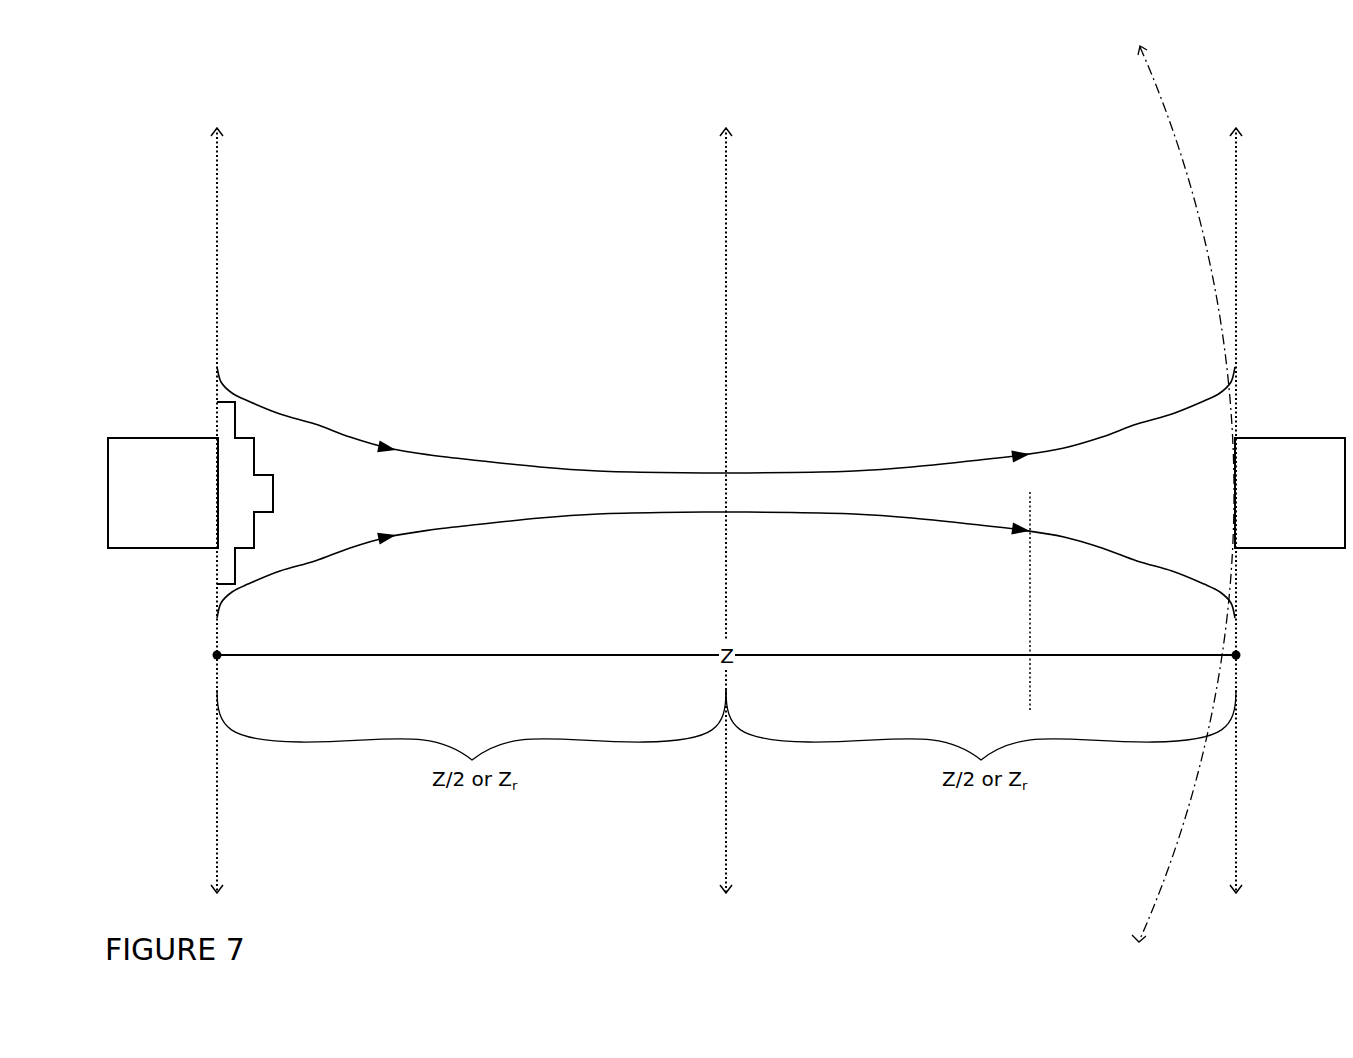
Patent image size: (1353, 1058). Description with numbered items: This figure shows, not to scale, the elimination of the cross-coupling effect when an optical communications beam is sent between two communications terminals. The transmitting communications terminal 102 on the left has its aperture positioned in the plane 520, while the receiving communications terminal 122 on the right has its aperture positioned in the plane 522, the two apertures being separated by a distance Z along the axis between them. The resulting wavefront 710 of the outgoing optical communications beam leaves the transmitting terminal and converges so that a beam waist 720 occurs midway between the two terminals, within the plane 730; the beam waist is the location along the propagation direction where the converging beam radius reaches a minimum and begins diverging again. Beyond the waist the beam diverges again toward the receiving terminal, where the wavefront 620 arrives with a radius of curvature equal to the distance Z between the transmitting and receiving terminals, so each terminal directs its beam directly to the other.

The communications terminal 102 is at (177, 548).
The communications terminal 122 is at (1262, 438).
The plane 520 is at (217, 292).
The plane 522 is at (1236, 284).
The wavefront 620 is at (1170, 872).
The wavefront 710 is at (217, 386).
The beam waist 720 is at (706, 499).
The plane 730 is at (726, 320).